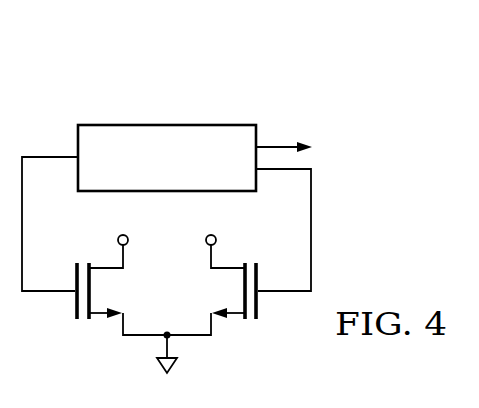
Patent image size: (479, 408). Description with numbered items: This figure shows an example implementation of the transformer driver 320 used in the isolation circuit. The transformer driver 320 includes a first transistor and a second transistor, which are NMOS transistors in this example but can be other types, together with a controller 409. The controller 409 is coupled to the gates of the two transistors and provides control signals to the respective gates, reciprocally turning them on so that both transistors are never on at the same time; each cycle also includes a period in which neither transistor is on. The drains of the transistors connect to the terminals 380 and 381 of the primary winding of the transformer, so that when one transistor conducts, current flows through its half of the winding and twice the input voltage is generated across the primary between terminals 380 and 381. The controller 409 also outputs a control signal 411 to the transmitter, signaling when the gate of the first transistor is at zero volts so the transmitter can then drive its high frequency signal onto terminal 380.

The transformer driver 320 is at (74, 75).
The controller 409 is at (167, 124).
The control signal 411 is at (278, 144).
The terminal 380 is at (118, 237).
The terminal 381 is at (216, 237).